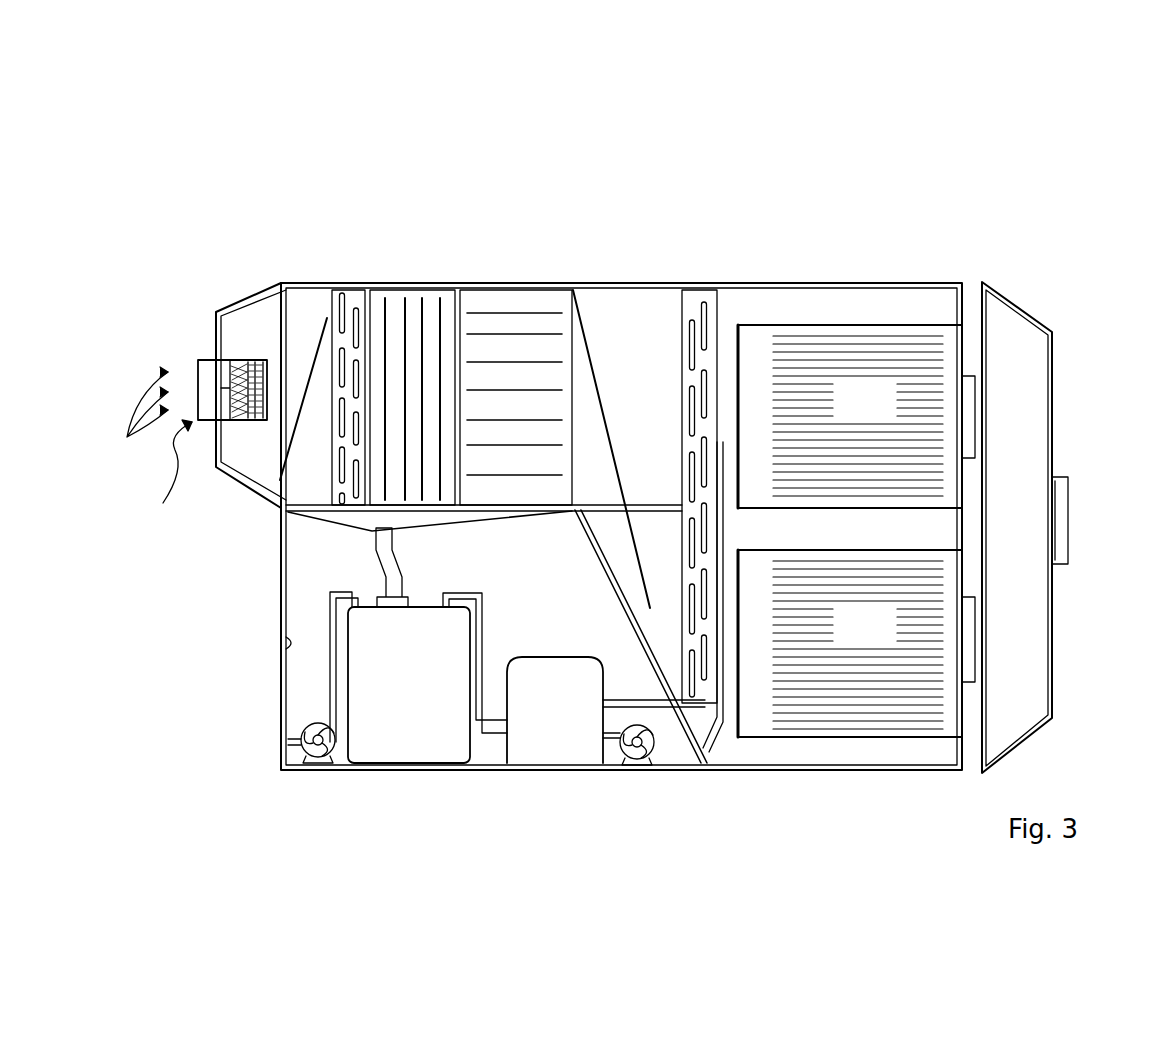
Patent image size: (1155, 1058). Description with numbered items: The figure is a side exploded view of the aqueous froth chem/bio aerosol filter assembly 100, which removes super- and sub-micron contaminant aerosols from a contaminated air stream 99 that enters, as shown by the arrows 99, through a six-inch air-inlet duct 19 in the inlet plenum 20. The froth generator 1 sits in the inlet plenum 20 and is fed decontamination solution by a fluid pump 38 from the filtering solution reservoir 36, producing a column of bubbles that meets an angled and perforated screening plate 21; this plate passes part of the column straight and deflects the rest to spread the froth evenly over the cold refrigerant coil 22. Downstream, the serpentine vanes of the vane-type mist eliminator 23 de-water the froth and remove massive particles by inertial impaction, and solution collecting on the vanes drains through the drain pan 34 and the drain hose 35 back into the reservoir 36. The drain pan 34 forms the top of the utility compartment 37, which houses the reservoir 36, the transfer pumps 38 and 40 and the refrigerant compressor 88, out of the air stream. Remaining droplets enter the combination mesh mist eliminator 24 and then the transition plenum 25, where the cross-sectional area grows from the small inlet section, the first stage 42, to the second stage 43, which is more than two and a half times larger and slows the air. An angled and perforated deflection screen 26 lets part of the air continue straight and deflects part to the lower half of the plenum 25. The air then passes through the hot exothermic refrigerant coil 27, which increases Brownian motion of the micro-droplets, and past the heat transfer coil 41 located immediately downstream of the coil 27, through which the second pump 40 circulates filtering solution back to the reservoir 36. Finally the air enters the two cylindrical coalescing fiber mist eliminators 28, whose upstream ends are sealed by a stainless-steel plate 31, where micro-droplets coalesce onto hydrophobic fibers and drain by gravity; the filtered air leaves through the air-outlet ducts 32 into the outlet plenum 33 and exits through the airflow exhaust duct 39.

The froth generator 1 is at (169, 479).
The air-inlet duct 19 is at (202, 375).
The inlet plenum 20 is at (247, 335).
The angled and perforated screening plate 21 is at (318, 338).
The cold refrigerant coil 22 is at (348, 303).
The vane-type mist eliminator 23 is at (412, 315).
The combination mesh mist eliminator 24 is at (510, 327).
The transition plenum 25 is at (652, 363).
The angled and perforated deflection screen 26 is at (590, 330).
The exothermic refrigerant coil 27 is at (705, 322).
The coalescing fiber mist eliminators 28 is at (850, 415).
The stainless-steel plate 31 is at (742, 672).
The air-outlet duct 32 is at (1075, 633).
The outlet plenum 33 is at (1010, 350).
The drain pan 34 is at (360, 528).
The drain hose 35 is at (385, 563).
The filtering solution reservoir 36 is at (393, 679).
The utility compartment 37 is at (290, 645).
The fluid pump 38 is at (320, 763).
The airflow exhaust duct 39 is at (1060, 520).
The second fluid transfer pump 40 is at (643, 763).
The heat transfer coil 41 is at (722, 707).
The first stage 42 is at (217, 240).
The second stage 43 is at (577, 247).
The refrigerant compressor 88 is at (538, 711).
The contaminated air stream 99 is at (139, 421).
The filter assembly 100 is at (1052, 165).